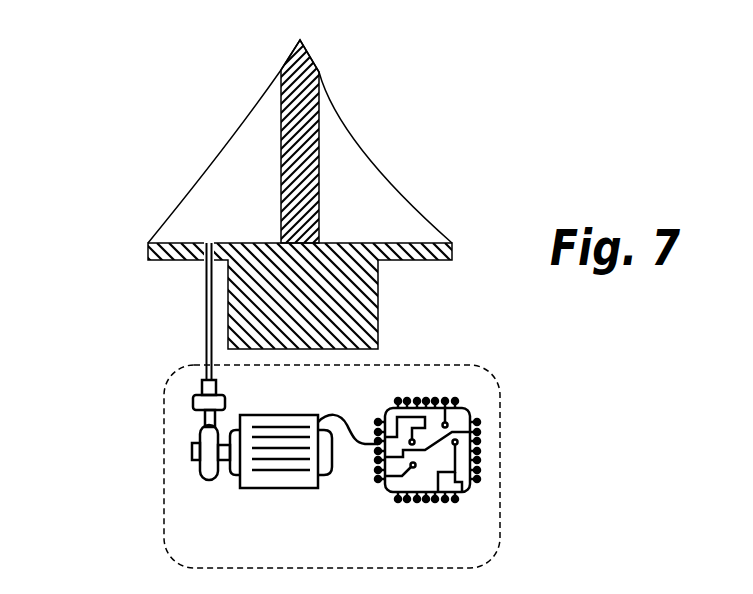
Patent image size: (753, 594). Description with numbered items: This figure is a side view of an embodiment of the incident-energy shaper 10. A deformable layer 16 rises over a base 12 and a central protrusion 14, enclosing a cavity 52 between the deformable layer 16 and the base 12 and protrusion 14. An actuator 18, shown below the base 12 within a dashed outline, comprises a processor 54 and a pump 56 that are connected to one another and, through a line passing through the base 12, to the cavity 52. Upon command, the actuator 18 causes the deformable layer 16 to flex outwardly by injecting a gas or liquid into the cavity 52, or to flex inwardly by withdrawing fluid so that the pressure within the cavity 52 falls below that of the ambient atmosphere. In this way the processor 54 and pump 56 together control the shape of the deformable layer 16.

The incident-energy shaper 10 is at (108, 107).
The base 12 is at (147, 252).
The protrusion 14 is at (319, 187).
The deformable layer 16 is at (340, 120).
The actuator 18 is at (500, 478).
The cavity 52 is at (262, 208).
The processor 54 is at (398, 499).
The pump 56 is at (278, 488).